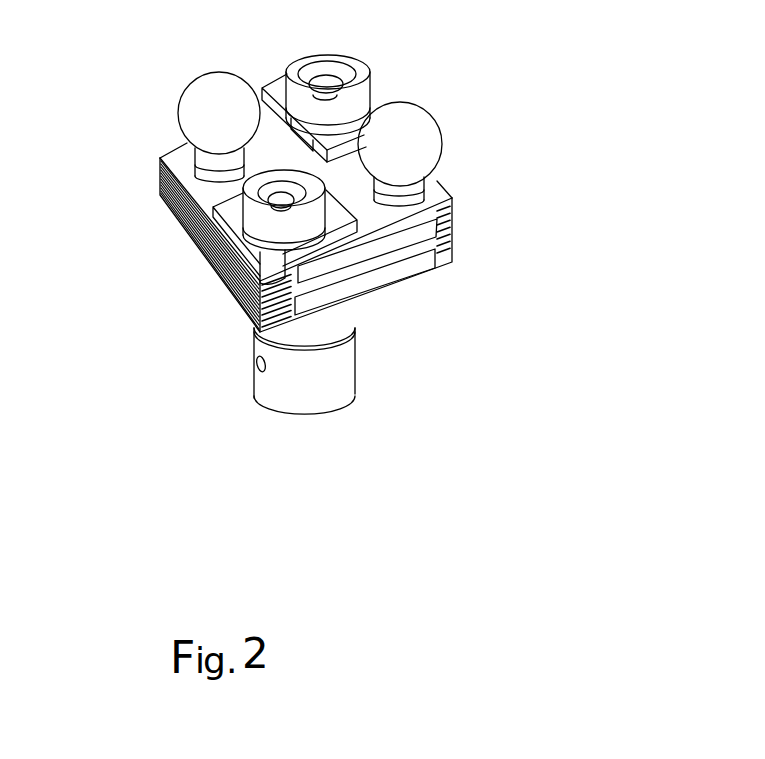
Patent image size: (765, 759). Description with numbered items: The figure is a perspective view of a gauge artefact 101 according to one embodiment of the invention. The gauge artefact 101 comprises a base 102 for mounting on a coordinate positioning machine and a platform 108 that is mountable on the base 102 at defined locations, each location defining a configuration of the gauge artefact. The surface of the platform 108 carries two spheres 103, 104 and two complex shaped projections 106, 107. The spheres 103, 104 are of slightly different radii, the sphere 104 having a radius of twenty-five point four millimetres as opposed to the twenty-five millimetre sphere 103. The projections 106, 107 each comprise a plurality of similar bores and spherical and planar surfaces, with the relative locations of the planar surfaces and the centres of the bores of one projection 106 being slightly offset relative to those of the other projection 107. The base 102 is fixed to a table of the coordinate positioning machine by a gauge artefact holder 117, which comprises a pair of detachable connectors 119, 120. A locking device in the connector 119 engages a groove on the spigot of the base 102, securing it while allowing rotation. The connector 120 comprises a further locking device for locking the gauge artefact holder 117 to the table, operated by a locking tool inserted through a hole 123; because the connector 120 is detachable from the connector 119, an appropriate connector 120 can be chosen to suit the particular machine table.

The gauge artefact 101 is at (352, 257).
The base 102 is at (358, 203).
The sphere 103 is at (442, 137).
The sphere 104 is at (178, 106).
The projection 106 is at (252, 241).
The projection 107 is at (357, 63).
The platform 108 is at (203, 185).
The gauge artefact holder 117 is at (352, 202).
The connector 119 is at (355, 307).
The connector 120 is at (268, 415).
The hole 123 is at (258, 376).